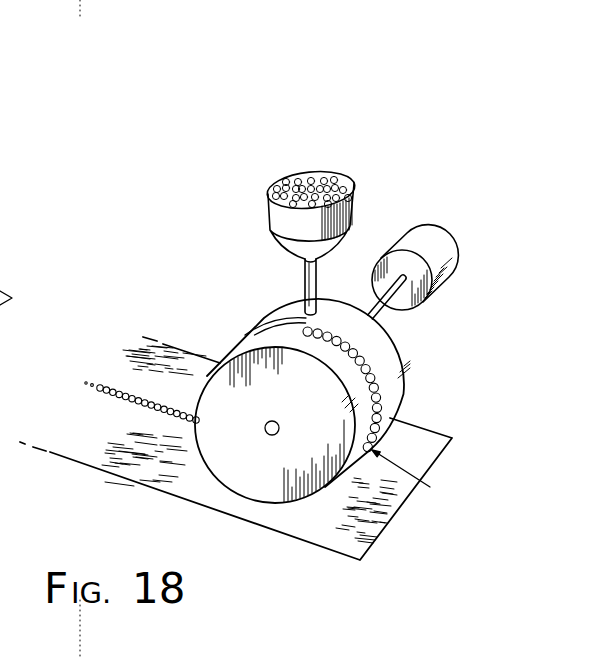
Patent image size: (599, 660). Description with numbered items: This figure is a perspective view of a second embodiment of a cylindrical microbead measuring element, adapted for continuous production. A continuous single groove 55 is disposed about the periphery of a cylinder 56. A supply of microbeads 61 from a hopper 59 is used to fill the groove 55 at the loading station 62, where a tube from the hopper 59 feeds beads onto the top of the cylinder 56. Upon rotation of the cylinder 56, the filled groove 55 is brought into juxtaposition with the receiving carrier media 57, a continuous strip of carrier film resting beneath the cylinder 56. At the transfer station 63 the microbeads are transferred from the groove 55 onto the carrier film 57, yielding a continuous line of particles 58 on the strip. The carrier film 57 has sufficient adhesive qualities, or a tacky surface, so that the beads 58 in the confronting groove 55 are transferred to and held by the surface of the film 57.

The continuous single groove 55 is at (275, 318).
The cylinder 56 is at (400, 367).
The carrier media 57 is at (158, 491).
The particles 58 is at (110, 396).
The hopper 59 is at (270, 212).
The microbeads 61 is at (323, 185).
The loading station 62 is at (300, 309).
The transfer station 63 is at (415, 476).